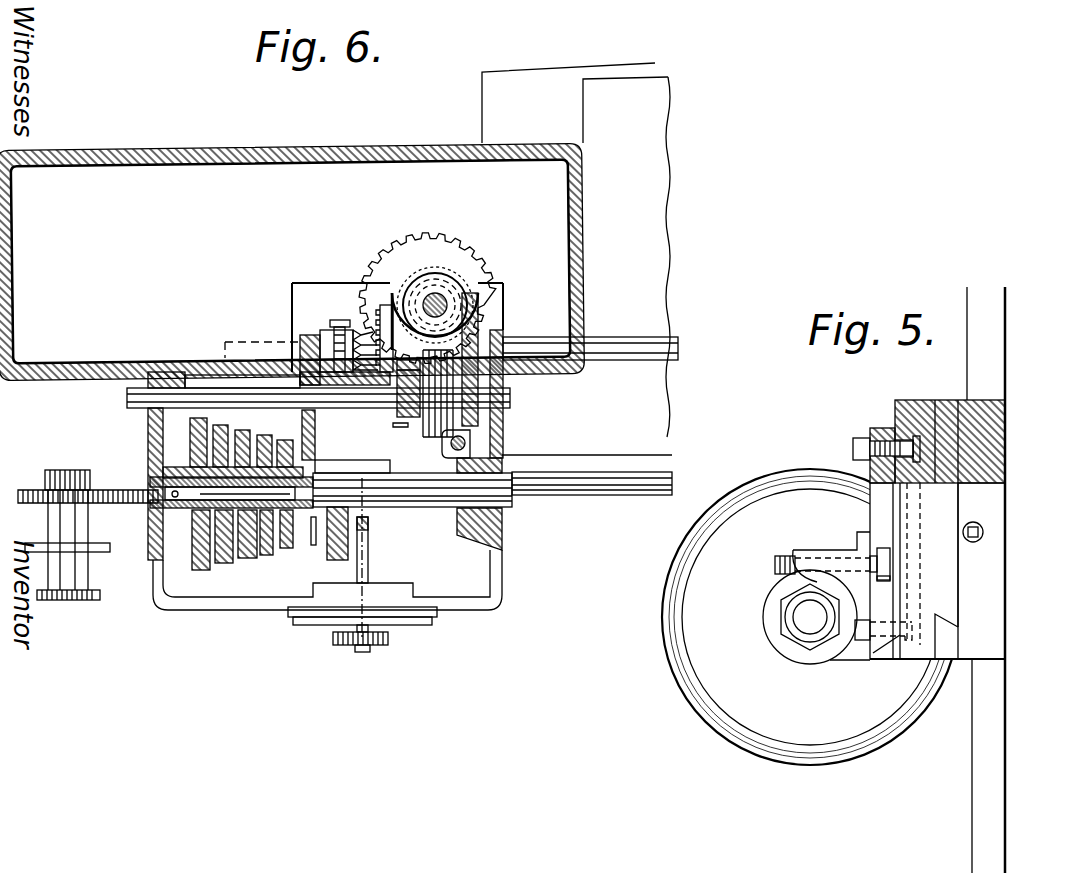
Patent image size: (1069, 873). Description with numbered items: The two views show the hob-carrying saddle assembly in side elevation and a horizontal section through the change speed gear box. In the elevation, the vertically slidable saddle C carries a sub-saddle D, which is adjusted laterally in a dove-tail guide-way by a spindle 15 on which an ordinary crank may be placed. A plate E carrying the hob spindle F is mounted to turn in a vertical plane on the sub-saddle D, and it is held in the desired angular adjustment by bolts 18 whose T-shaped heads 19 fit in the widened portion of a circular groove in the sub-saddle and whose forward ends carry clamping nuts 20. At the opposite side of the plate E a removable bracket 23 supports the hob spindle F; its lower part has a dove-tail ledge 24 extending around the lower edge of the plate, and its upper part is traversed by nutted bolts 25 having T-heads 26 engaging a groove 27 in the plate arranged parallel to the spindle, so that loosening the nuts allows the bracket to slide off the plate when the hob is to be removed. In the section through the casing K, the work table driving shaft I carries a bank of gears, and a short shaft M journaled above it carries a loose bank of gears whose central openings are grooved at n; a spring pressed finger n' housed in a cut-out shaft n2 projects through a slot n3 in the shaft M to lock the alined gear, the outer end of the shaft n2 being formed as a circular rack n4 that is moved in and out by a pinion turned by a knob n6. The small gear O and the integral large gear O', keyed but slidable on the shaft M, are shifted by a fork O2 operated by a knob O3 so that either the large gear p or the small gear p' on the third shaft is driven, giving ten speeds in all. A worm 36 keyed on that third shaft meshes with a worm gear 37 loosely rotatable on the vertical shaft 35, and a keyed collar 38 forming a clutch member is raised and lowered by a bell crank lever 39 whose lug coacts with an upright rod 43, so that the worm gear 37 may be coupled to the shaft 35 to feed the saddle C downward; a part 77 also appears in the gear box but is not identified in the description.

In FIG. 6, the shaft 35 is at (455, 300).
In FIG. 6, the worm 36 is at (458, 365).
In FIG. 6, the worm gear 37 is at (441, 270).
In FIG. 6, the collar 38 is at (410, 280).
In FIG. 6, the bell crank lever 39 is at (560, 340).
In FIG. 6, the upright rod 43 is at (467, 443).
In FIG. 6, the adjusting screw 77 is at (338, 330).
In FIG. 6, the large gear p is at (307, 341).
In FIG. 6, the small gear p' is at (405, 411).
In FIG. 6, the groove n is at (200, 446).
In FIG. 6, the spring pressed finger n' is at (276, 551).
In FIG. 6, the cut-out shaft n2 is at (152, 505).
In FIG. 6, the slot n3 is at (247, 540).
In FIG. 6, the circular rack n4 is at (35, 490).
In FIG. 6, the knob n6 is at (68, 602).
In FIG. 6, the small gear O is at (324, 534).
In FIG. 6, the large gear O' is at (327, 553).
In FIG. 6, the fork O2 is at (368, 562).
In FIG. 6, the knob O3 is at (380, 645).
In FIG. 6, the short shaft M is at (418, 508).
In FIG. 6, the drive shaft I is at (632, 480).
In FIG. 6, the casing K is at (483, 612).
In FIG. 5, the spindle 15 is at (975, 542).
In FIG. 5, the bolts 18 is at (853, 449).
In FIG. 5, the T-shaped heads 19 is at (905, 440).
In FIG. 5, the clamping nuts 20 is at (870, 440).
In FIG. 5, the removable bracket 23 is at (800, 560).
In FIG. 5, the dove-tail ledge 24 is at (885, 655).
In FIG. 5, the nutted bolts 25 is at (775, 565).
In FIG. 5, the T-heads 26 is at (890, 564).
In FIG. 5, the groove 27 is at (890, 580).
In FIG. 5, the saddle C is at (981, 571).
In FIG. 5, the sub-saddle D is at (943, 420).
In FIG. 5, the plate E is at (885, 512).
In FIG. 5, the hob spindle F is at (805, 617).